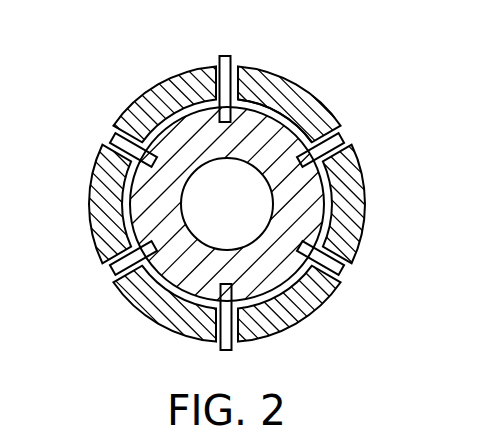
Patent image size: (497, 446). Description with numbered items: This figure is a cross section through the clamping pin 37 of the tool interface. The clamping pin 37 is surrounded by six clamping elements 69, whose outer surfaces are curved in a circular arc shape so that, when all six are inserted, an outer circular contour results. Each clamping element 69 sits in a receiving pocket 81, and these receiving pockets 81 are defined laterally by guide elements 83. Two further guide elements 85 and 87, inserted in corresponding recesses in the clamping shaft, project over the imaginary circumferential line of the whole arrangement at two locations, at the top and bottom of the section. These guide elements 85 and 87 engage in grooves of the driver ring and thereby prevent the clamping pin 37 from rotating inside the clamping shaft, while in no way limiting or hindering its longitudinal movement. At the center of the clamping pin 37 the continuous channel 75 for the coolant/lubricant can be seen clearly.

The clamping pin 37 is at (305, 193).
The clamping elements 69 is at (312, 103).
The continuous channel 75 is at (240, 205).
The receiving pockets 81 is at (270, 112).
The guide elements 83 is at (332, 141).
The guide element 85 is at (224, 56).
The guide element 87 is at (237, 350).